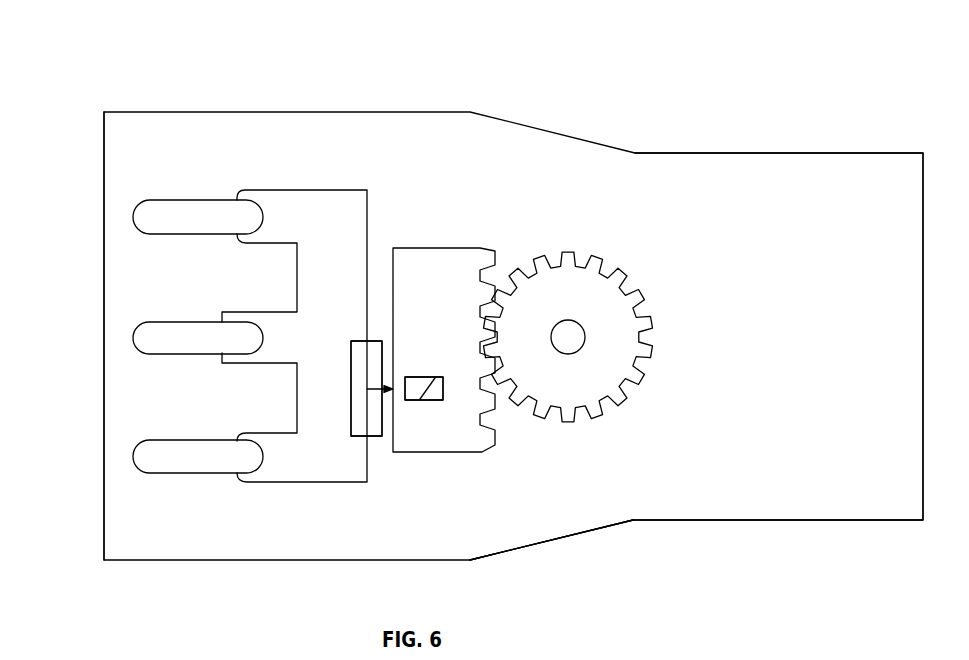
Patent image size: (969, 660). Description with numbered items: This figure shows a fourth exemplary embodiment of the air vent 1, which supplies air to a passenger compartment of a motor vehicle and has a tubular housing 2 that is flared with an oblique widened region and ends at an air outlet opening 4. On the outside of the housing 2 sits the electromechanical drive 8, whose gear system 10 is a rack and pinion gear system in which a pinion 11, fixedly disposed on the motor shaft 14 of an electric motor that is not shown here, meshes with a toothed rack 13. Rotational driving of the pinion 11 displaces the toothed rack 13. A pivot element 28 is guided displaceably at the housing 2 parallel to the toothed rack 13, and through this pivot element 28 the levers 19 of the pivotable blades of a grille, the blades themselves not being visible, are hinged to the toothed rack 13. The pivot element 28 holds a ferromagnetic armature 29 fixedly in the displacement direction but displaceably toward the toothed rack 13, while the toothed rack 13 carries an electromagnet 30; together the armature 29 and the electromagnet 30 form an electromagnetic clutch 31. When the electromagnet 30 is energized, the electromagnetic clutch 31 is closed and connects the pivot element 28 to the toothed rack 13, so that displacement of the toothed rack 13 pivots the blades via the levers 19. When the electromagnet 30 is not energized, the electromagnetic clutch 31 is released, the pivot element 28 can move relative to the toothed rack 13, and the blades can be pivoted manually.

The air vent 1 is at (710, 90).
The housing 2 is at (797, 153).
The air outlet opening 4 is at (82, 337).
The electromechanical drive 8 is at (558, 516).
The gear system 10 is at (551, 540).
The pinion 11 is at (617, 337).
The toothed rack 13 is at (437, 258).
The motor shaft 14 is at (568, 337).
The levers 19 is at (176, 218).
The pivot element 28 is at (323, 207).
The ferromagnetic armature 29 is at (360, 430).
The electromagnet 30 is at (422, 400).
The electromagnetic clutch 31 is at (397, 388).